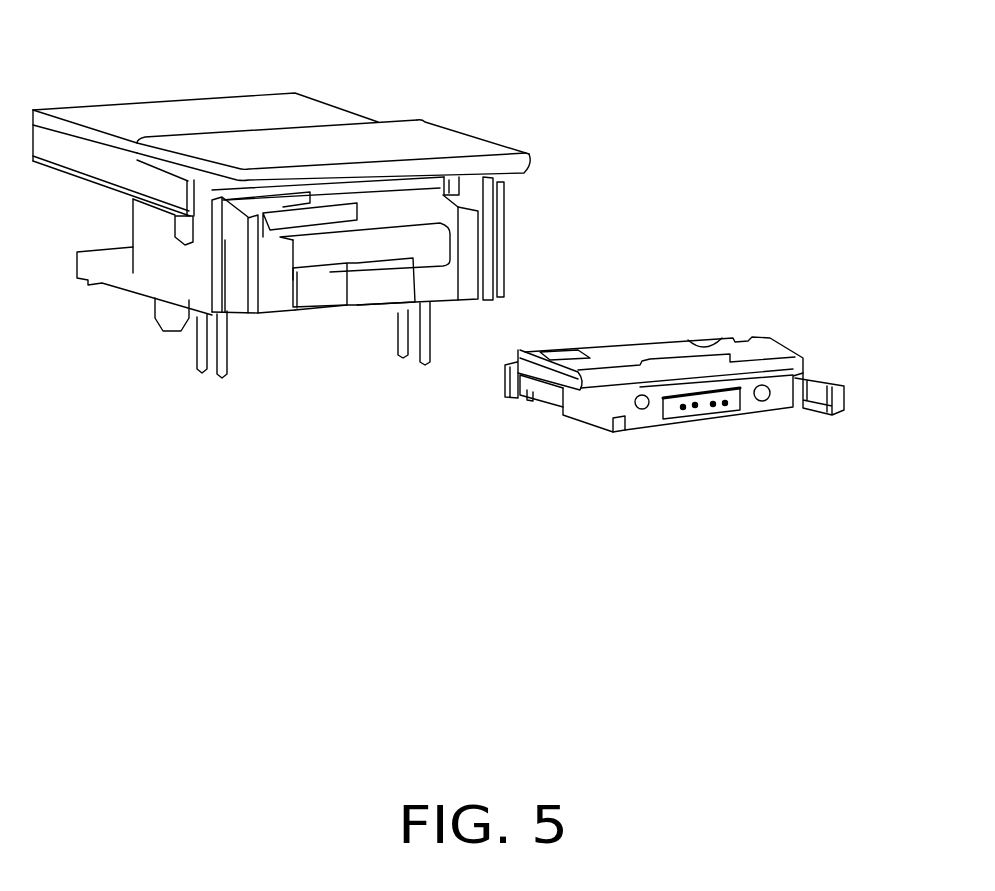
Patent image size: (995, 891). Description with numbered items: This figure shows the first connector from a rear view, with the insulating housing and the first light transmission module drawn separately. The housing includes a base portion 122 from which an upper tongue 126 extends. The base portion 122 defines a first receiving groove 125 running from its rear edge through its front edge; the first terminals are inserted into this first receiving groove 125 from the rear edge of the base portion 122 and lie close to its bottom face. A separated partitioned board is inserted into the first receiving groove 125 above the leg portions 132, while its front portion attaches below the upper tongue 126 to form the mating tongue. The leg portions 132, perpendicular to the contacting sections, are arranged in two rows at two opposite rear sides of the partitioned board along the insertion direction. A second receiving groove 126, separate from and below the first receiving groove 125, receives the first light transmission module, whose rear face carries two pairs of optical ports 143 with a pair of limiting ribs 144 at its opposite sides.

The base portion 122 is at (157, 279).
The first receiving groove 125 is at (435, 187).
The upper tongue 126 is at (170, 117).
The leg portions 132 is at (265, 203).
The optical ports 143 is at (727, 403).
The limiting ribs 144 is at (835, 393).